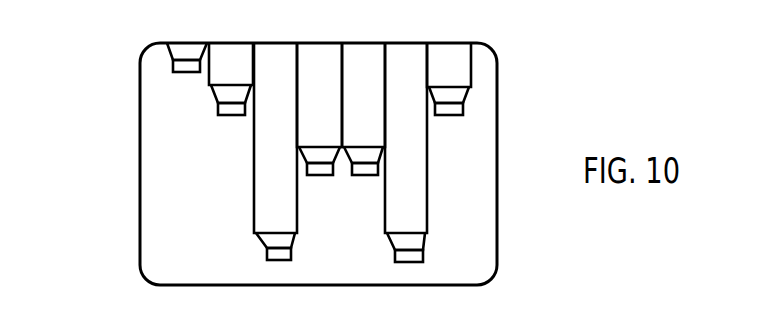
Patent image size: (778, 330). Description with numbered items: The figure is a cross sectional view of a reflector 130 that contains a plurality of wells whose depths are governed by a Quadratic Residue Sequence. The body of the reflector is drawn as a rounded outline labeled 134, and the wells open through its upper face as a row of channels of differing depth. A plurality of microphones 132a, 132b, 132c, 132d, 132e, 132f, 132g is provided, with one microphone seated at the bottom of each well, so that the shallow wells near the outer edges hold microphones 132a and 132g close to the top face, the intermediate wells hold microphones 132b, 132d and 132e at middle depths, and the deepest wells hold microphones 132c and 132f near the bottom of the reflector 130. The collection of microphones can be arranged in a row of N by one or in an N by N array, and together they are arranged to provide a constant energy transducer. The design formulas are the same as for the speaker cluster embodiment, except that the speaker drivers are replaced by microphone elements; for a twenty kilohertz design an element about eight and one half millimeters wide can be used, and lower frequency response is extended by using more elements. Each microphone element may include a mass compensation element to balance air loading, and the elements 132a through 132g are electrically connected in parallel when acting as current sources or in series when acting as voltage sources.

The reflector 130 is at (94, 68).
The housing 134 is at (143, 223).
The microphone 132a is at (185, 48).
The microphone 132b is at (227, 67).
The microphone 132c is at (277, 241).
The microphone 132d is at (322, 155).
The microphone 132e is at (367, 163).
The microphone 132f is at (408, 243).
The microphone 132g is at (449, 70).